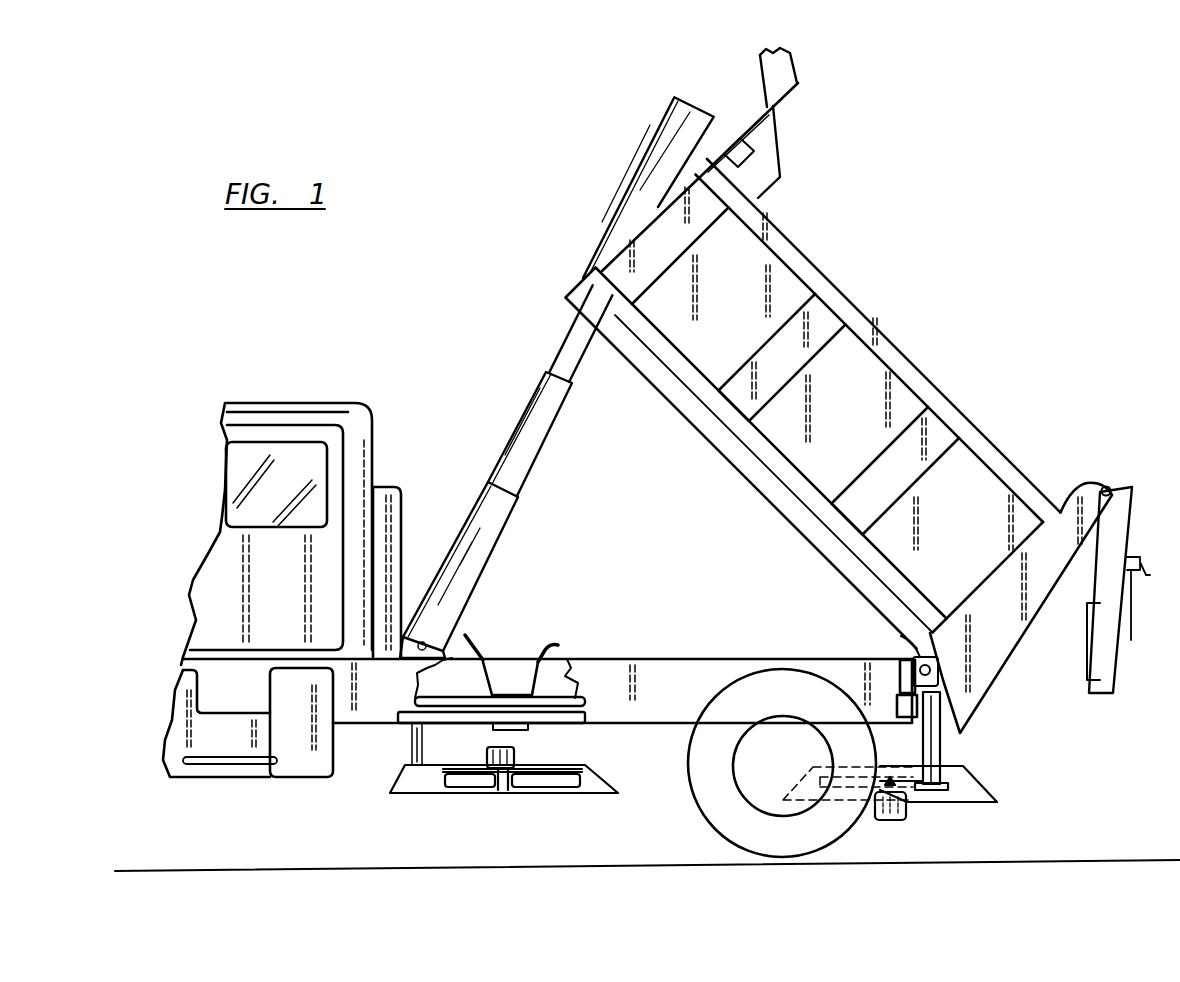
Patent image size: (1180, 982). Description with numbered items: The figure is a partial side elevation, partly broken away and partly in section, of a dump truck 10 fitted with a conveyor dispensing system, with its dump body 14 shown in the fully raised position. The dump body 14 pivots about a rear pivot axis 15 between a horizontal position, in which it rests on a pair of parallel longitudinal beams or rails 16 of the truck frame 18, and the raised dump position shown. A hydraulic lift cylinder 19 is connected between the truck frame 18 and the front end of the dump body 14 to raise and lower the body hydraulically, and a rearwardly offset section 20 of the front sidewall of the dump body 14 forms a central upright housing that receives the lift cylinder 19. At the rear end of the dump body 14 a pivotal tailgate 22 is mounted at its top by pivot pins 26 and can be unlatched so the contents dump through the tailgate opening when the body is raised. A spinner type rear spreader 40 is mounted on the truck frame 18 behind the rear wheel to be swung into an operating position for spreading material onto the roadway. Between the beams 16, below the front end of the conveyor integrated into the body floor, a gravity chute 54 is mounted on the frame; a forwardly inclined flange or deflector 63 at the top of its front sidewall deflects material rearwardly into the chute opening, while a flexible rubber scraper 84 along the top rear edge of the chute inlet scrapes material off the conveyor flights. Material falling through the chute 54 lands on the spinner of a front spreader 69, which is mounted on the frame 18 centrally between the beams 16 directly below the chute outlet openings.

The dump truck 10 is at (298, 370).
The dump body 14 is at (932, 366).
The rear pivot axis 15 is at (918, 652).
The longitudinal beams or rails 16 is at (660, 706).
The truck frame 18 is at (372, 708).
The hydraulic lift cylinder 19 is at (519, 497).
The rearwardly offset section 20 is at (783, 140).
The tailgate 22 is at (1120, 672).
The pivot pins 26 is at (1108, 485).
The rear spreader 40 is at (1000, 774).
The gravity chute 54 is at (468, 681).
The forwardly inclined flange or deflector 63 is at (476, 636).
The front spreader 69 is at (380, 801).
The flexible rubber scraper 84 is at (562, 648).